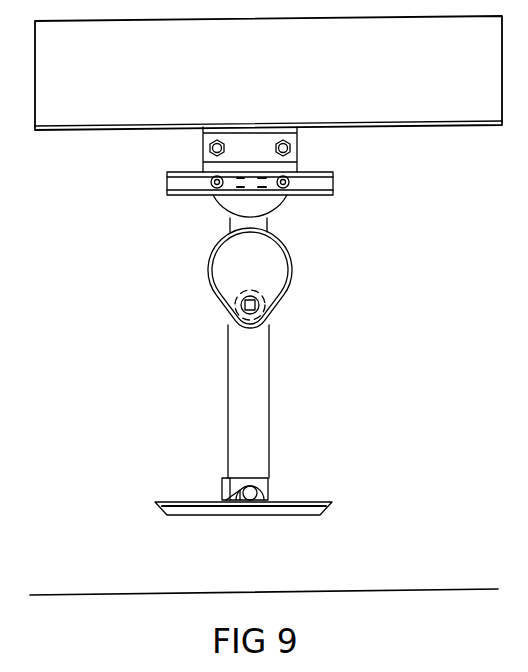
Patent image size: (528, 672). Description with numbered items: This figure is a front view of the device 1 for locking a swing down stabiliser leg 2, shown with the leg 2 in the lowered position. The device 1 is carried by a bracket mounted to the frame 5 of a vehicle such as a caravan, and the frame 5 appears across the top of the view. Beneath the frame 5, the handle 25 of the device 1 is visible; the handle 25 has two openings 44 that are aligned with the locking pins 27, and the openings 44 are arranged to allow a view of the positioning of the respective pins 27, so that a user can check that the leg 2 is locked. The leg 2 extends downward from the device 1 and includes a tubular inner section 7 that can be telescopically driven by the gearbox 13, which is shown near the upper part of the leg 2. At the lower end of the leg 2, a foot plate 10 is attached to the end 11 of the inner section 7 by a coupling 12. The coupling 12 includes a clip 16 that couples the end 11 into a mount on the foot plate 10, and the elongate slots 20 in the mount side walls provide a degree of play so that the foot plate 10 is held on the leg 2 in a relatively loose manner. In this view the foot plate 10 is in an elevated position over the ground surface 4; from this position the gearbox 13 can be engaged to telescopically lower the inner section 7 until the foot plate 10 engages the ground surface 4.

The device 1 is at (333, 178).
The swing down stabiliser leg 2 is at (269, 390).
The ground surface 4 is at (103, 593).
The frame 5 is at (467, 125).
The tubular inner section 7 is at (266, 500).
The foot plate 10 is at (305, 500).
The end 11 is at (270, 497).
The coupling 12 is at (220, 482).
The gearbox 13 is at (212, 290).
The clip 16 is at (268, 462).
The elongate slots 20 is at (245, 479).
The handle 25 is at (323, 193).
The locking pin 27 is at (216, 178).
The openings 44 is at (213, 197).